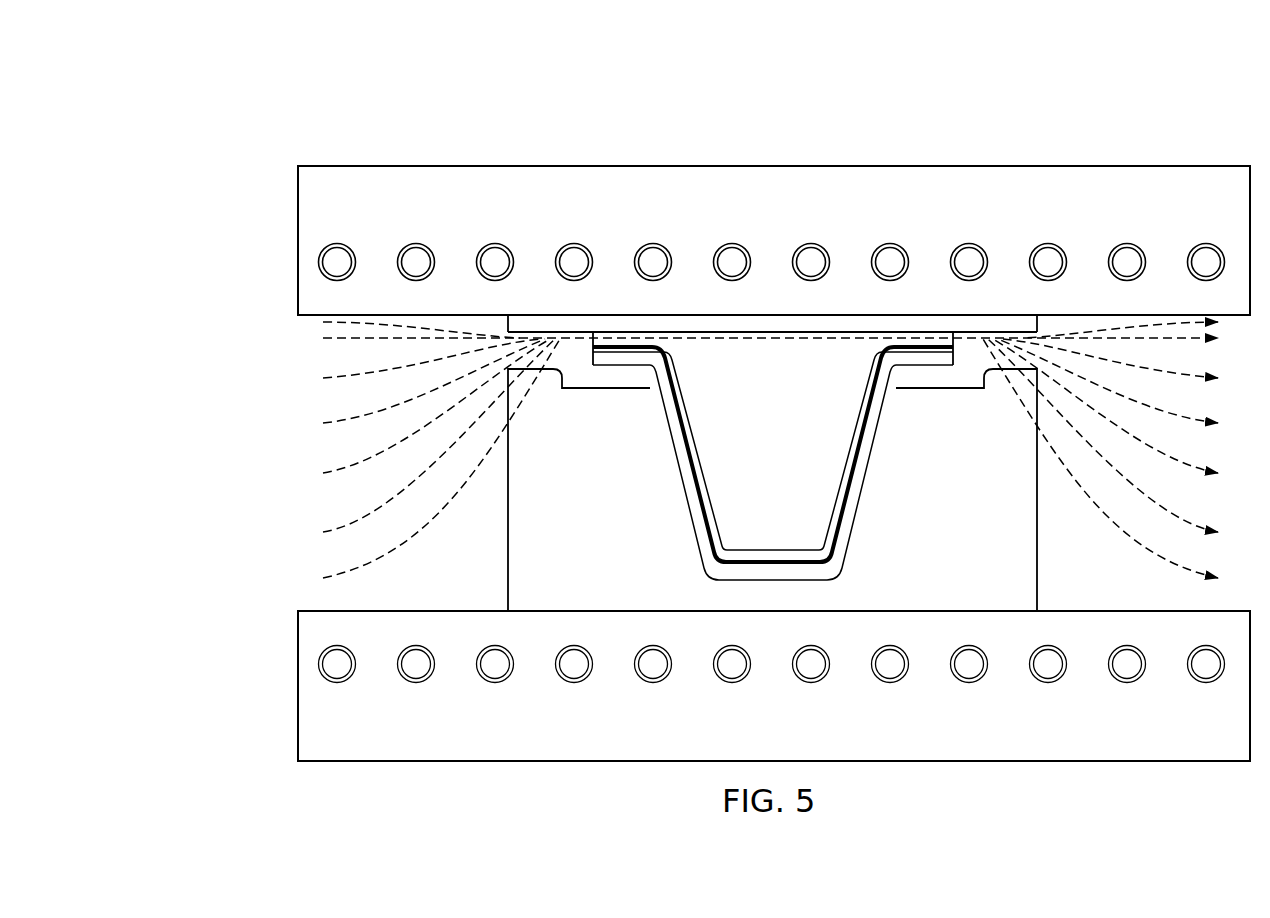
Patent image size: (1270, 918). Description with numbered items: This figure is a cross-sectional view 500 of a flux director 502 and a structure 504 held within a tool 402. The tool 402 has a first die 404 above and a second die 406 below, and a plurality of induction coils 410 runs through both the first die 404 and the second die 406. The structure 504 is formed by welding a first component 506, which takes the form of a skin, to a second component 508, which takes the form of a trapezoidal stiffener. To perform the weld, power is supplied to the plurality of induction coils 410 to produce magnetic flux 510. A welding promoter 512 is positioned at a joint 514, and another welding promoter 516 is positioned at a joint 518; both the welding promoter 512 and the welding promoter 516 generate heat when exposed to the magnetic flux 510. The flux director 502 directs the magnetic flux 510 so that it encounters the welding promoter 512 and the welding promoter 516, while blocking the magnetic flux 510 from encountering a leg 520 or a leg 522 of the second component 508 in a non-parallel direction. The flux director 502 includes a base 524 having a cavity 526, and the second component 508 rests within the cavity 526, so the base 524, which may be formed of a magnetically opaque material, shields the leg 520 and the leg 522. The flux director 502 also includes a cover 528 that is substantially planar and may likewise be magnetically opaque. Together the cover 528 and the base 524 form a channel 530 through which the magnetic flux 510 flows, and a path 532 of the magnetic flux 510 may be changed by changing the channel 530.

The view 500 is at (266, 113).
The tool 402 is at (1176, 134).
The first die 404 is at (298, 240).
The second die 406 is at (297, 687).
The plurality of induction coils 410 is at (489, 244).
The flux director 502 is at (1047, 574).
The structure 504 is at (655, 373).
The first component 506 is at (787, 331).
The second component 508 is at (773, 548).
The magnetic flux 510 is at (287, 520).
The welding promoter 512 is at (623, 343).
The joint 514 is at (590, 348).
The welding promoter 516 is at (921, 345).
The joint 518 is at (920, 368).
The leg 520 is at (703, 463).
The leg 522 is at (855, 427).
The base 524 is at (507, 575).
The cavity 526 is at (722, 366).
The cover 528 is at (1040, 325).
The channel 530 is at (300, 345).
The path 532 is at (968, 340).